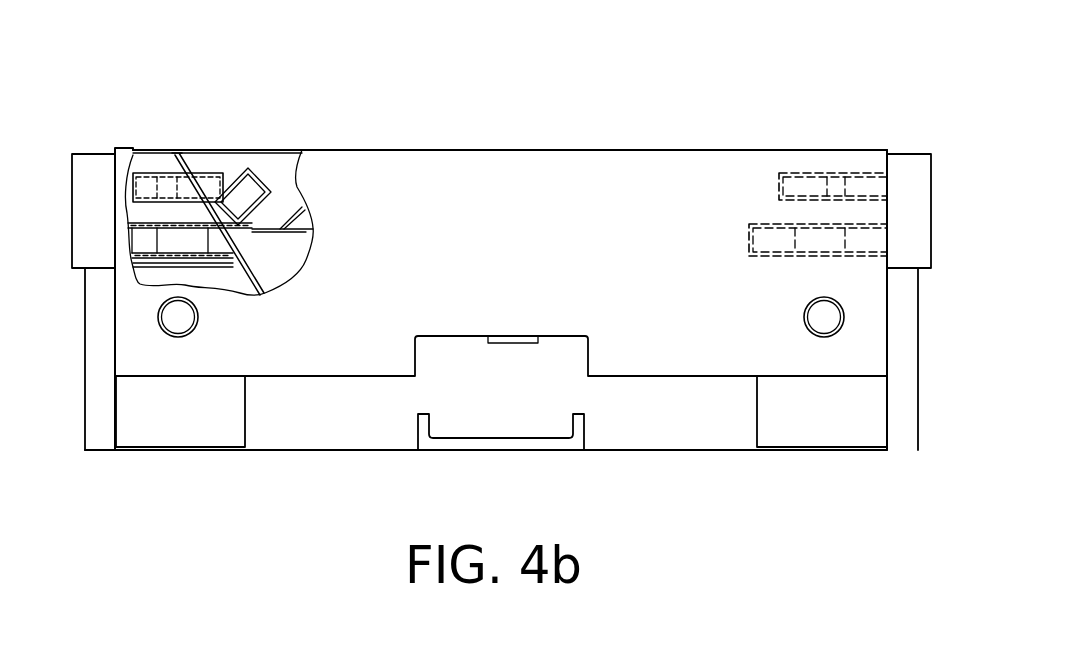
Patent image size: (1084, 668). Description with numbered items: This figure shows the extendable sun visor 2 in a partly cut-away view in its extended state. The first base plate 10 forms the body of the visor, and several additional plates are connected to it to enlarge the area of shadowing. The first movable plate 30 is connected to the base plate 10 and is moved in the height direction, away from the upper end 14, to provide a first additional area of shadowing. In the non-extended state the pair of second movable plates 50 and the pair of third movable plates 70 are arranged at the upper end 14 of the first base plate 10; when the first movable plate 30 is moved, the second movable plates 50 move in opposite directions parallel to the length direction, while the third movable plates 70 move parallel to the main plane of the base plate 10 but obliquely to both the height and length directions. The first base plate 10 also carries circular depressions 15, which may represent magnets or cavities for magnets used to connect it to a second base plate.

The sun visor 2 is at (630, 90).
The first base plate 10 is at (677, 307).
The upper end 14 is at (405, 150).
The circular depressions 15 is at (178, 317).
The first movable plate 30 is at (327, 403).
The second movable plates 50 is at (93, 188).
The third movable plates 70 is at (98, 440).